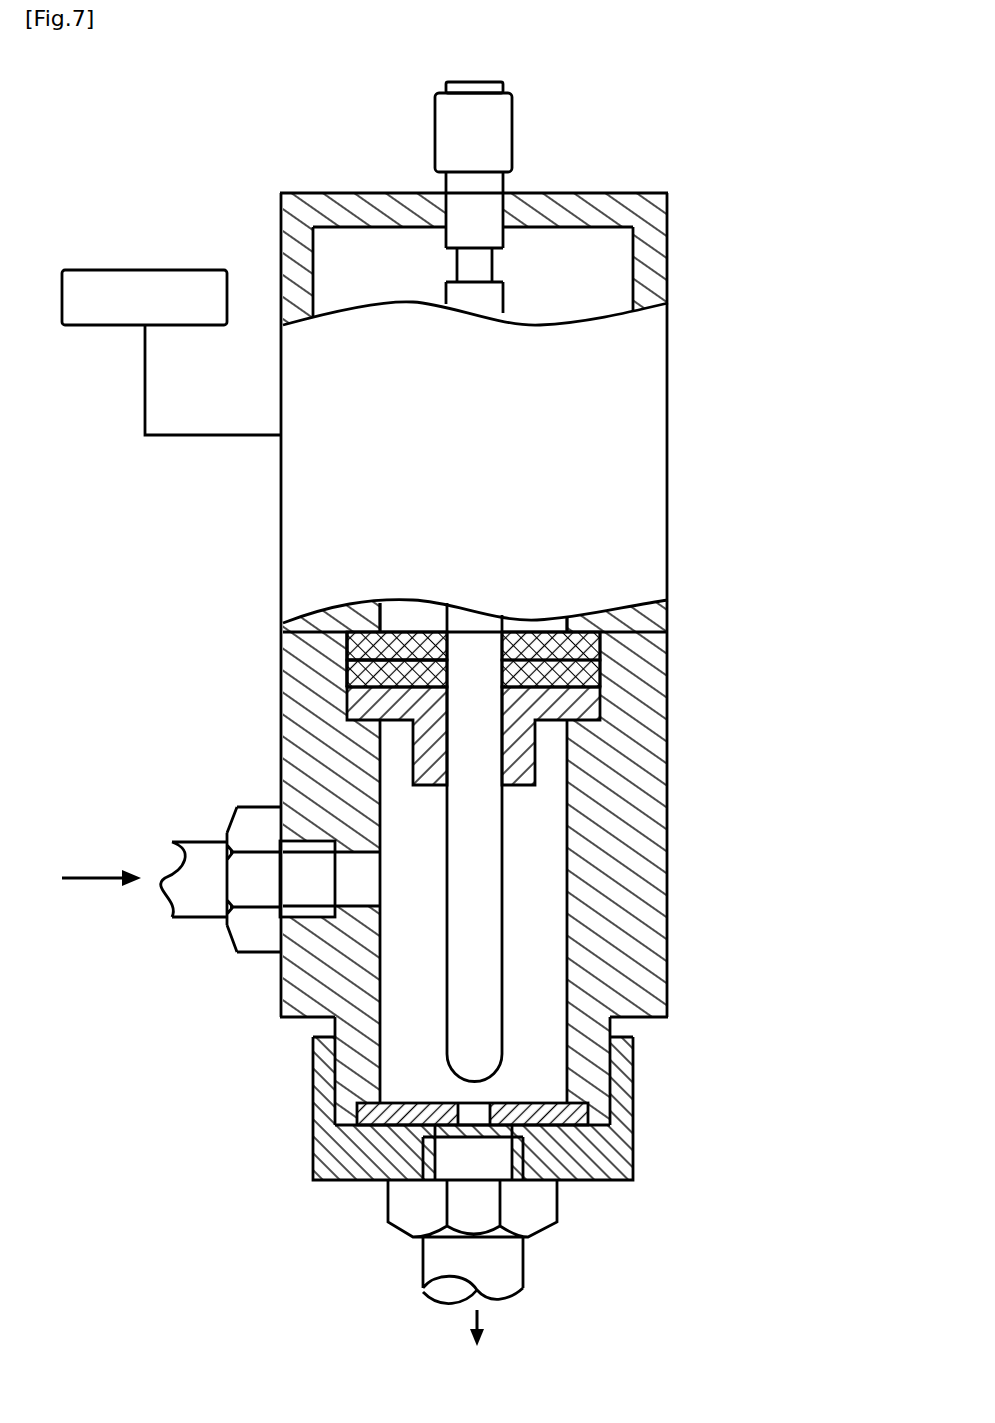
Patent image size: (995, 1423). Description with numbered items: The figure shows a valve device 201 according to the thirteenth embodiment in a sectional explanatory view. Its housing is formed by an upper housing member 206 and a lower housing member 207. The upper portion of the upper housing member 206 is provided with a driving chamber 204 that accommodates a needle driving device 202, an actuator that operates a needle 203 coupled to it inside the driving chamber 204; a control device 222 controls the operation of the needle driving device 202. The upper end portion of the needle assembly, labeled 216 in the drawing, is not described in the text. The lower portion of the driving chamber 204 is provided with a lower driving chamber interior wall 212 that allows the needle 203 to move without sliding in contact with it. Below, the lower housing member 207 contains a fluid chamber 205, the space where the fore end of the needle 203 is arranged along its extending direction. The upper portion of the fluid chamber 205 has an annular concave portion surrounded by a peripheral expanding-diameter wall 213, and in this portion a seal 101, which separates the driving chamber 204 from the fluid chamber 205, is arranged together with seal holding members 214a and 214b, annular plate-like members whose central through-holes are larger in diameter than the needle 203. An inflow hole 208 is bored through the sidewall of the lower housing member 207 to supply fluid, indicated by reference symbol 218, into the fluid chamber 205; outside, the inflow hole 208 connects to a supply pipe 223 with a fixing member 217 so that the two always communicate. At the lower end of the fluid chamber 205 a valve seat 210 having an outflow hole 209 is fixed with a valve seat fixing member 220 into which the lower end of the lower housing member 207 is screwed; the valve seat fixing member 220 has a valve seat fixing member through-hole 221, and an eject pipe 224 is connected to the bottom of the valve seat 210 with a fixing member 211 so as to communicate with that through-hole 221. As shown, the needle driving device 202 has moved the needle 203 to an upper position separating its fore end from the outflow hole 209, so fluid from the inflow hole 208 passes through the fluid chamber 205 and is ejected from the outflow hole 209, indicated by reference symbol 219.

The seal 101 is at (565, 736).
The valve device 201 is at (260, 1274).
The needle driving device 202 is at (539, 605).
The needle 203 is at (621, 665).
The driving chamber 204 is at (662, 572).
The fluid chamber 205 is at (579, 911).
The upper housing member 206 is at (535, 602).
The lower housing member 207 is at (531, 878).
The inflow hole 208 is at (235, 842).
The outflow hole 209 is at (618, 1041).
The valve seat 210 is at (565, 1081).
The fixing member 211 is at (560, 1208).
The lower driving chamber interior wall 212 is at (277, 626).
The peripheral expanding-diameter wall 213 is at (288, 659).
The seal holding member 214a is at (574, 647).
The seal holding member 214b is at (574, 677).
The actuator 216 is at (616, 172).
The fixing member 217 is at (276, 920).
The fluid supply 218 is at (99, 923).
The fluid ejection 219 is at (572, 1324).
The valve seat fixing member 220 is at (540, 1108).
The valve seat fixing member through-hole 221 is at (595, 1152).
The control device 222 is at (171, 309).
The supply pipe 223 is at (182, 927).
The eject pipe 224 is at (569, 1270).